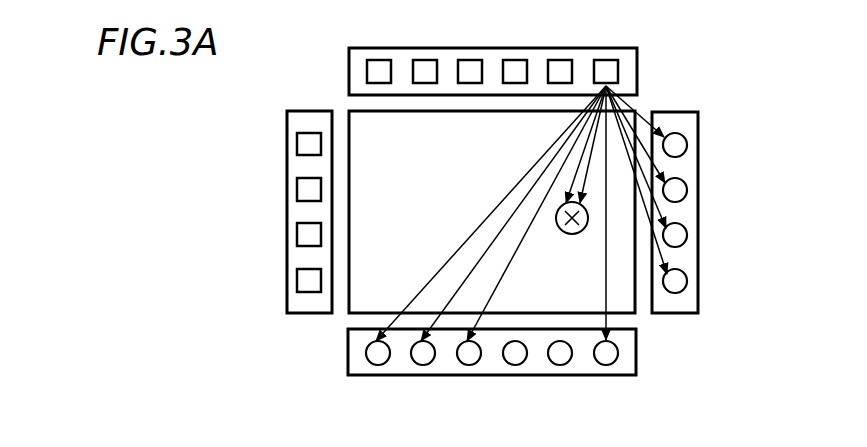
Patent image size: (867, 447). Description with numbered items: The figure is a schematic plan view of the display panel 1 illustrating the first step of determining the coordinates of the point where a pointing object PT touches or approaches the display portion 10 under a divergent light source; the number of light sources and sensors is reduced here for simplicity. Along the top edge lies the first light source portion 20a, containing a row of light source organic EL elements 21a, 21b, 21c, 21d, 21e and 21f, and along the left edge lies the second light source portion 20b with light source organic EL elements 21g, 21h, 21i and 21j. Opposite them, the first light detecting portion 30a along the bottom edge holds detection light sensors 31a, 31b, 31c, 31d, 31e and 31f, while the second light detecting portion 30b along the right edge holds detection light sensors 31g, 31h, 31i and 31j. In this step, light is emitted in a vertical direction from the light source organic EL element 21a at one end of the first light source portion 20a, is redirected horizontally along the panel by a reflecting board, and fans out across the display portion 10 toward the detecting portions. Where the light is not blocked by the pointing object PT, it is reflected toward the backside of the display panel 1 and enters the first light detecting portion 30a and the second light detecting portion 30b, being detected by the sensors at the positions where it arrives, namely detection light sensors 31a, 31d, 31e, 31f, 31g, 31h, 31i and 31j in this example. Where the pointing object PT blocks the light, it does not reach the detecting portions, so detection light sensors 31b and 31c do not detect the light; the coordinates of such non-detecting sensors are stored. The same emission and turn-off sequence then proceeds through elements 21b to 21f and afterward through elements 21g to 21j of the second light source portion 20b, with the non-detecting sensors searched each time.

The display panel 1 is at (703, 50).
The display portion 10 is at (348, 314).
The first light source portion 20a is at (637, 75).
The second light source portion 20b is at (312, 110).
The light source organic EL element 21a is at (606, 60).
The light source organic EL element 21b is at (560, 60).
The light source organic EL element 21c is at (515, 60).
The light source organic EL element 21d is at (470, 60).
The light source organic EL element 21e is at (425, 60).
The light source organic EL element 21f is at (378, 60).
The light source organic EL element 21g is at (297, 144).
The light source organic EL element 21h is at (297, 189).
The light source organic EL element 21i is at (297, 234).
The light source organic EL element 21j is at (297, 280).
The first light detecting portion 30a is at (638, 350).
The second light detecting portion 30b is at (678, 111).
The detection light sensor 31a is at (606, 366).
The detection light sensor 31b is at (560, 366).
The detection light sensor 31c is at (515, 366).
The detection light sensor 31d is at (469, 366).
The detection light sensor 31e is at (423, 366).
The detection light sensor 31f is at (378, 366).
The detection light sensor 31g is at (687, 145).
The detection light sensor 31h is at (687, 190).
The detection light sensor 31i is at (687, 235).
The detection light sensor 31j is at (687, 281).
The pointing object PT is at (563, 231).